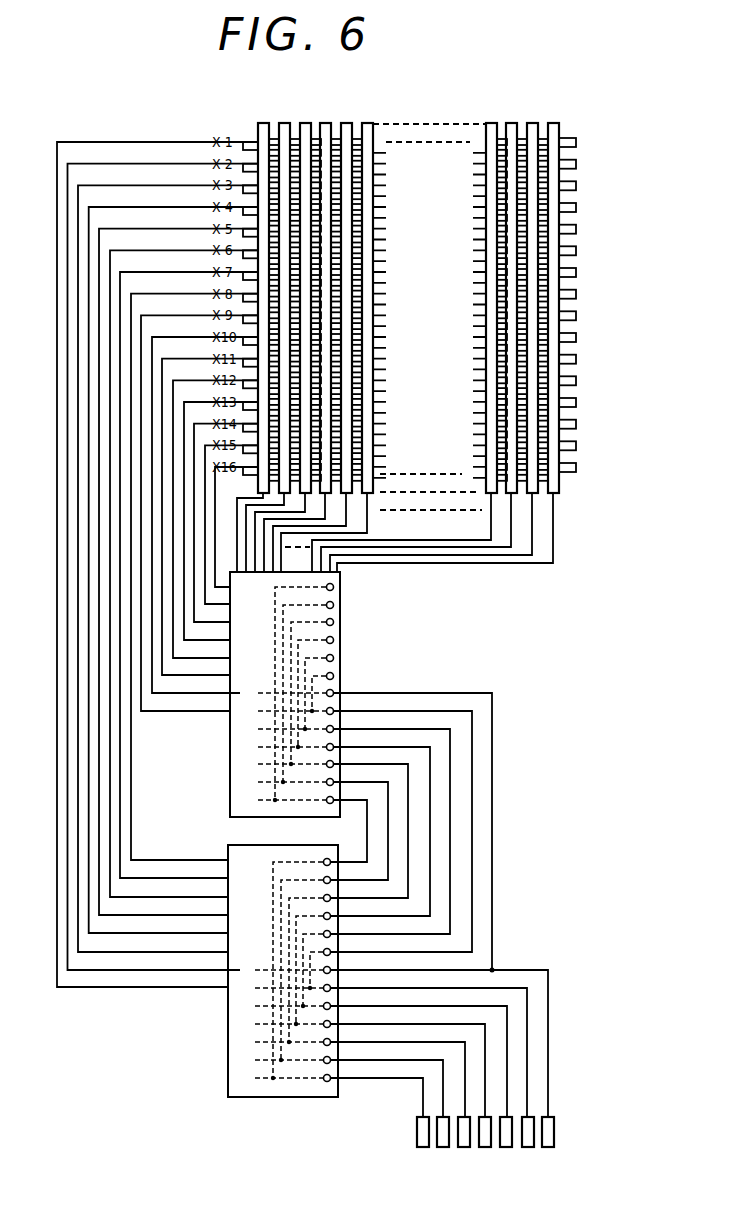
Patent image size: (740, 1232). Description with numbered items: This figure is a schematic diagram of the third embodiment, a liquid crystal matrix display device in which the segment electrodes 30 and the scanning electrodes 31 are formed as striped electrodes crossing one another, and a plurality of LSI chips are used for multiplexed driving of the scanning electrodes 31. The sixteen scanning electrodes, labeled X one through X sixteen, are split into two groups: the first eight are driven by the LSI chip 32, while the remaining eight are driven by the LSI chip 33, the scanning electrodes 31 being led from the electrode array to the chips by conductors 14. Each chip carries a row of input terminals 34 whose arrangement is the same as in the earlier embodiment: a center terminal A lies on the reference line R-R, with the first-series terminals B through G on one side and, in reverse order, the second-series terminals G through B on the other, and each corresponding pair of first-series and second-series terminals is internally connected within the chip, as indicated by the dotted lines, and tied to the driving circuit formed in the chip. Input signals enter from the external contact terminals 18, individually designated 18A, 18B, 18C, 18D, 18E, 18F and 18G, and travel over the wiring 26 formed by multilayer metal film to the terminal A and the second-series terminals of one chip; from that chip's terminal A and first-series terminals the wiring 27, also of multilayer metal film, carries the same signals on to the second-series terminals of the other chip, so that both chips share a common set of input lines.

The segment electrodes 30 is at (263, 124).
The scanning electrodes 31 is at (250, 140).
The lead wires 14 is at (438, 557).
The LSI chip 33 is at (240, 738).
The LSI chip 32 is at (240, 1075).
The input terminals 34 is at (335, 641).
The wiring 27 is at (494, 852).
The wiring 26 is at (550, 1046).
The external contact terminals 18 is at (486, 1149).
The external contact terminal 18A is at (548, 1147).
The external contact terminal 18B is at (528, 1147).
The external contact terminal 18C is at (506, 1147).
The external contact terminal 18D is at (485, 1147).
The external contact terminal 18E is at (464, 1147).
The external contact terminal 18F is at (443, 1147).
The external contact terminal 18G is at (423, 1147).